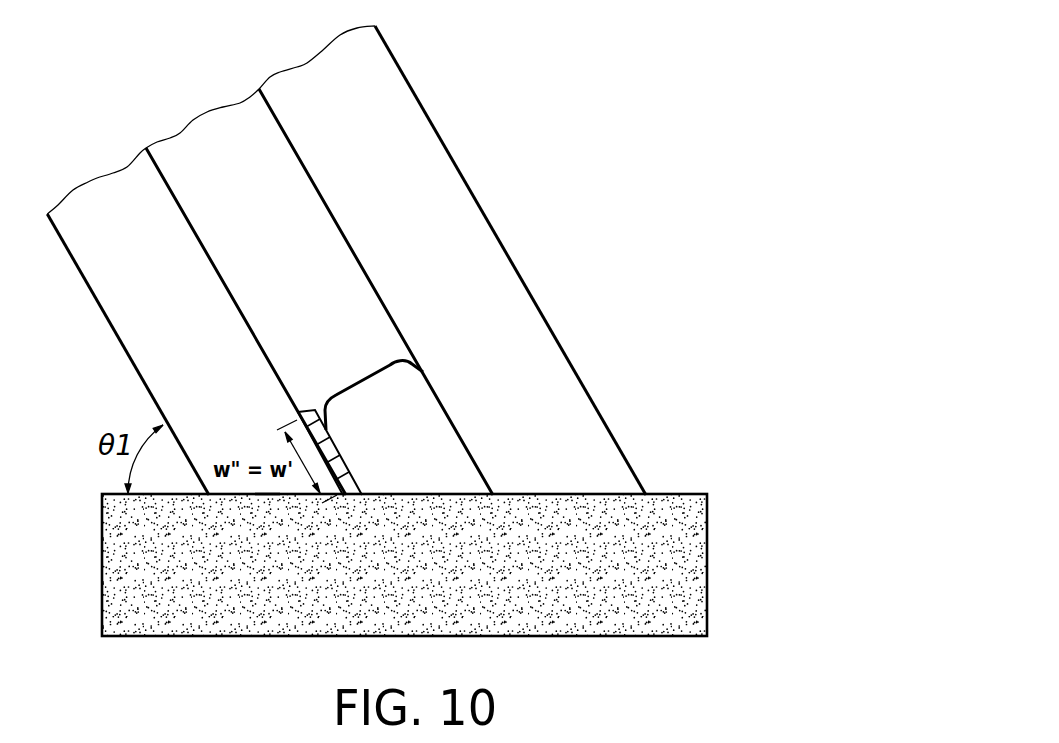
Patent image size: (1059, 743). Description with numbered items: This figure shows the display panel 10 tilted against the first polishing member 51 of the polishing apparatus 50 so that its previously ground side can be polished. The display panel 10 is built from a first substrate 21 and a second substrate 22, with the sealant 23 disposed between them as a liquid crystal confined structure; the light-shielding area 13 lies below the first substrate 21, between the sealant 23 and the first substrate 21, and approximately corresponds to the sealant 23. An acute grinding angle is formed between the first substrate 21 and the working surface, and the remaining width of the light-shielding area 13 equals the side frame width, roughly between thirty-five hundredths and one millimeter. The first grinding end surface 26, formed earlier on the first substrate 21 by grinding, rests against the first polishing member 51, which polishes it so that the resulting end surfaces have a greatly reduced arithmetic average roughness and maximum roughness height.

The display panel 10 is at (337, 260).
The first substrate 21 is at (93, 274).
The second substrate 22 is at (545, 338).
The sealant 23 is at (385, 387).
The light-shielding area 13 is at (297, 413).
The first grinding end surface 26 is at (267, 494).
The polishing apparatus 50 is at (452, 590).
The first polishing member 51 is at (727, 637).